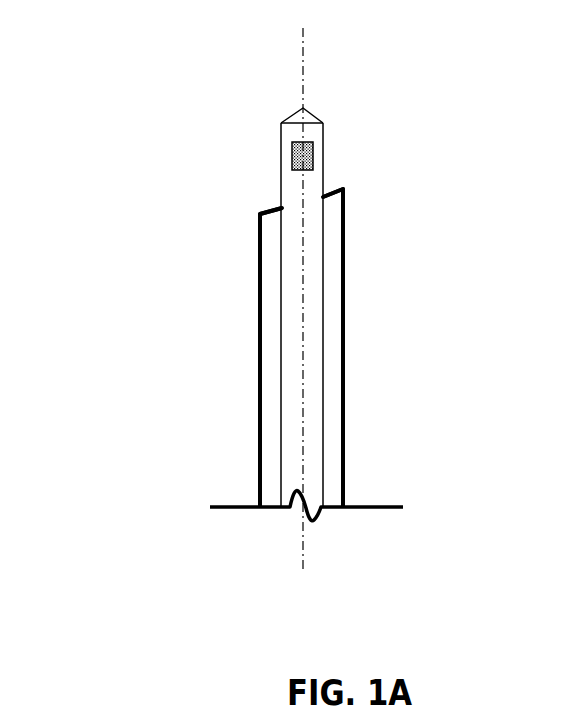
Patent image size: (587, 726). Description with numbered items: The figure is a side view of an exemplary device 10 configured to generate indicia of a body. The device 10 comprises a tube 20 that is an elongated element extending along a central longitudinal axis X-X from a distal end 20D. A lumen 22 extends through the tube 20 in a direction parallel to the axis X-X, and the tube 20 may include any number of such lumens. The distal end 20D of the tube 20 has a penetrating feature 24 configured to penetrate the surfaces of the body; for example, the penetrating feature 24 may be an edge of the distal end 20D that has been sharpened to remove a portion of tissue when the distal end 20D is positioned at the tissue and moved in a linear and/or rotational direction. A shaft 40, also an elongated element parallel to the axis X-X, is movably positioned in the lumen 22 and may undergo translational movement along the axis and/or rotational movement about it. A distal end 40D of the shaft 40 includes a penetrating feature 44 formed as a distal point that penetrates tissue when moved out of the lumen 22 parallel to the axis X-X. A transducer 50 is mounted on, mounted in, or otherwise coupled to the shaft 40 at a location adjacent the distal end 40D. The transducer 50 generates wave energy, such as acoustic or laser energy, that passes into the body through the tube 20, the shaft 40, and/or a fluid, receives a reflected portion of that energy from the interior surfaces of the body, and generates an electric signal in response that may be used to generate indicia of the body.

The device 10 is at (130, 269).
The tube 20 is at (345, 397).
The distal end 20D is at (350, 189).
The lumen 22 is at (329, 327).
The penetrating feature 24 is at (270, 208).
The shaft 40 is at (313, 285).
The distal end 40D is at (318, 102).
The penetrating feature 44 is at (303, 108).
The transducer 50 is at (315, 150).